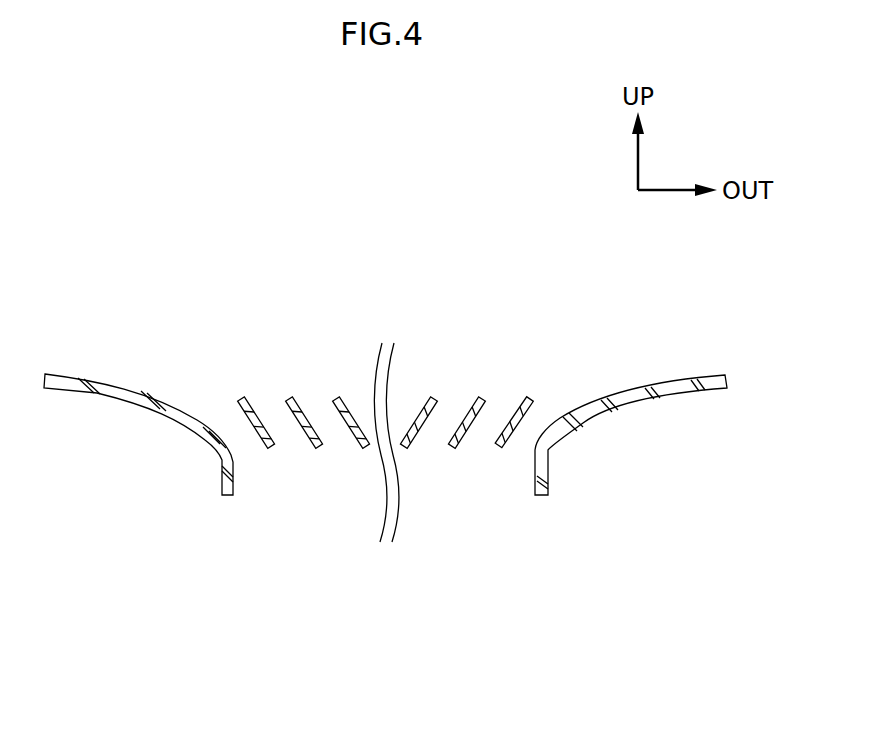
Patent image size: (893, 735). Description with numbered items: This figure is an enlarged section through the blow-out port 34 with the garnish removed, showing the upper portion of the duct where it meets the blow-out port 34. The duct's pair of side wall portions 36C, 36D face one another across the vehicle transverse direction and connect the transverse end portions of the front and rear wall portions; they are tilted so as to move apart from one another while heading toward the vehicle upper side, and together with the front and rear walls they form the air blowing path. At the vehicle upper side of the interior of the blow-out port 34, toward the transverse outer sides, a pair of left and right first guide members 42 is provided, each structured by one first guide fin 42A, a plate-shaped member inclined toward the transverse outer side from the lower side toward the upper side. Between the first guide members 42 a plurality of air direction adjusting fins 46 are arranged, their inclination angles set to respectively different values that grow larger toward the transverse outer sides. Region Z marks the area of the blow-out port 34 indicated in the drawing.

The blow-out port 34 is at (530, 447).
The side wall portion 36C is at (220, 488).
The side wall portion 36D is at (548, 478).
The first guide member 42 is at (406, 408).
The first guide fin 42A is at (239, 397).
The air direction adjusting fin 46 is at (365, 447).
The region Z is at (151, 328).